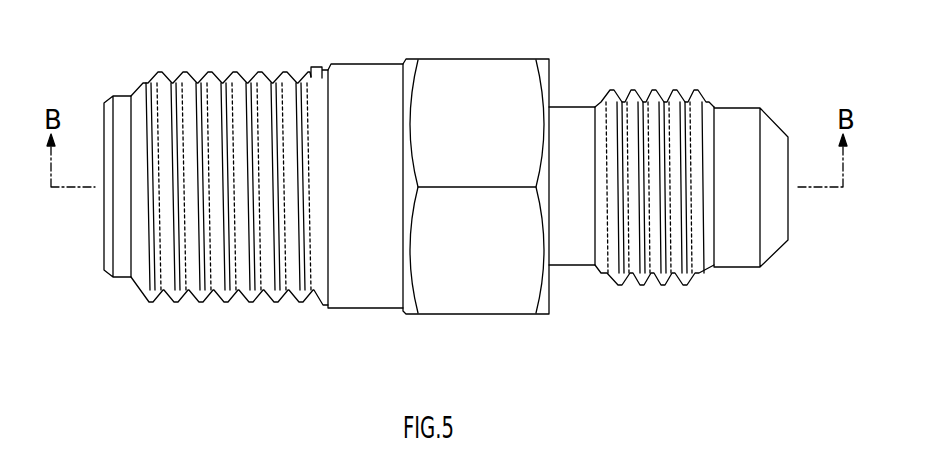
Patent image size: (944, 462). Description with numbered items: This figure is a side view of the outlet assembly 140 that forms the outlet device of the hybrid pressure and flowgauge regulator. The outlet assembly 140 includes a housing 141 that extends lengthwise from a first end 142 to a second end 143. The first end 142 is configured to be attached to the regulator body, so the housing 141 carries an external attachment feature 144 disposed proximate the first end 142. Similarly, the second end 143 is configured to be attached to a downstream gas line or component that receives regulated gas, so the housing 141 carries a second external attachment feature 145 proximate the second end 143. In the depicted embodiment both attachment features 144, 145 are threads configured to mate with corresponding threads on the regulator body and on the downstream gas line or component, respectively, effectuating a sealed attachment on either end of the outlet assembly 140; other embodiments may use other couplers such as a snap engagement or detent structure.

The outlet assembly 140 is at (307, 69).
The housing 141 is at (370, 90).
The first end 142 is at (109, 97).
The second end 143 is at (775, 122).
The external attachment feature 144 is at (208, 89).
The external attachment feature 145 is at (653, 88).